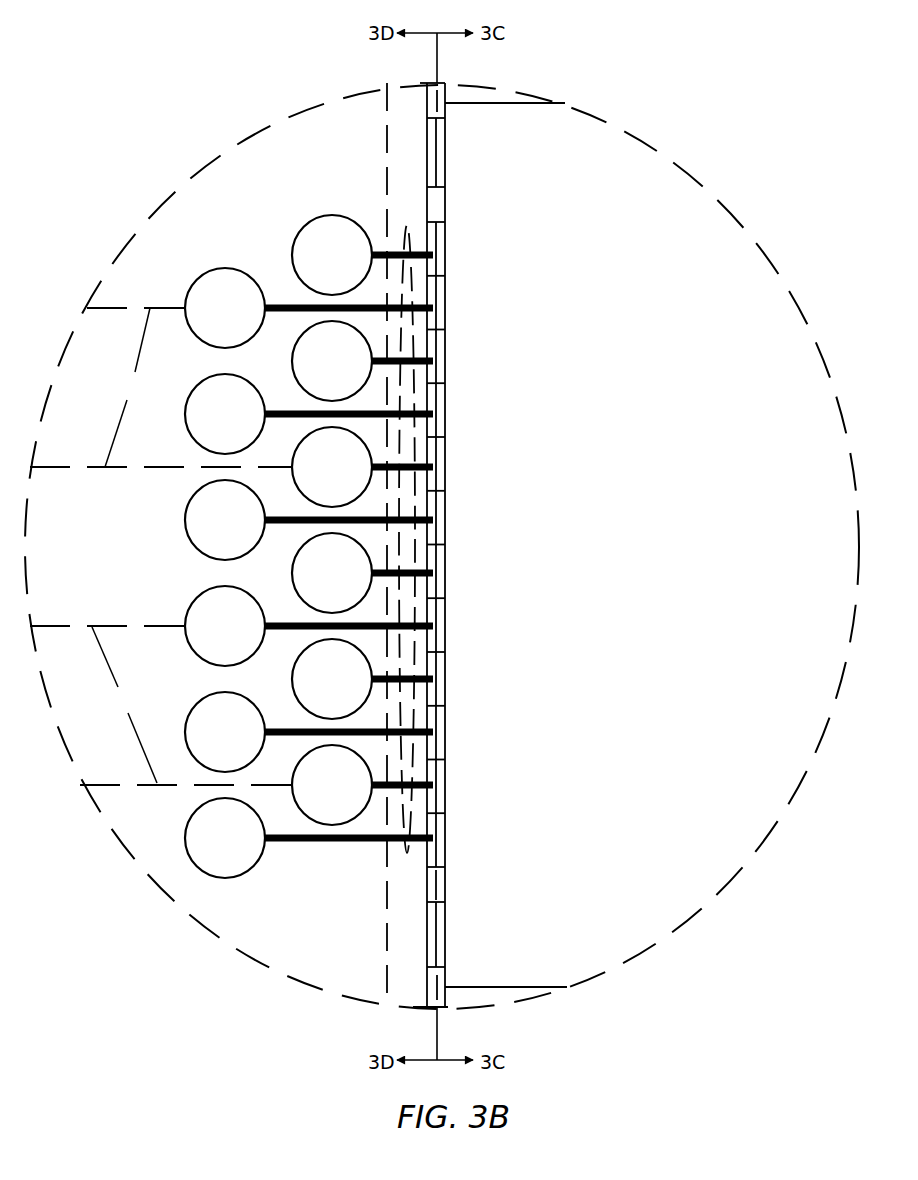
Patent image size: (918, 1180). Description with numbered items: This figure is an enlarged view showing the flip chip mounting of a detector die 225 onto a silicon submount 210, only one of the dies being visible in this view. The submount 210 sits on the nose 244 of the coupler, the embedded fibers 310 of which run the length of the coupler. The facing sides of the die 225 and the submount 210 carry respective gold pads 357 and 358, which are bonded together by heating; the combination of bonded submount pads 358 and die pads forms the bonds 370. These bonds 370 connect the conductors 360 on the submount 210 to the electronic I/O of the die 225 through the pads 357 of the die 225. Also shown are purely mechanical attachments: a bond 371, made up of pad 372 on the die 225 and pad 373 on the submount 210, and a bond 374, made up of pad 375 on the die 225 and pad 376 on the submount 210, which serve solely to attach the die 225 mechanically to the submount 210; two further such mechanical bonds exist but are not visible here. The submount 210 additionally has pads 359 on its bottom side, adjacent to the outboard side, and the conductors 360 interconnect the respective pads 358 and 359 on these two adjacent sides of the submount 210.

The submount 210 is at (118, 571).
The detector die 225 is at (690, 558).
The nose 244 is at (387, 975).
The embedded fibers 310 is at (124, 545).
The pads 357 is at (448, 244).
The pads 358 is at (422, 859).
The pads 359 is at (320, 214).
The conductors 360 is at (407, 245).
The bonds 370 is at (436, 871).
The bond 371 is at (437, 975).
The pad 372 is at (445, 932).
The pad 373 is at (427, 933).
The bond 374 is at (438, 110).
The pad 375 is at (446, 153).
The pad 376 is at (427, 155).